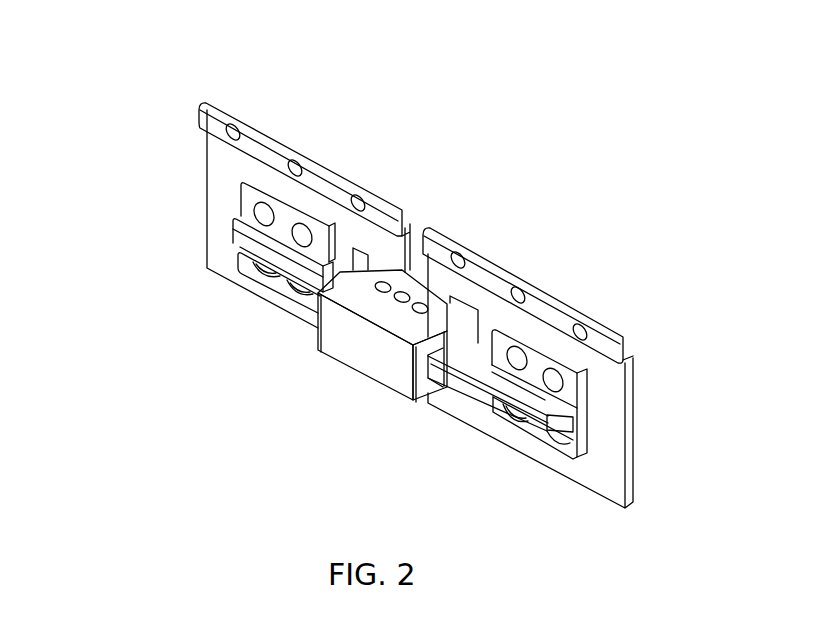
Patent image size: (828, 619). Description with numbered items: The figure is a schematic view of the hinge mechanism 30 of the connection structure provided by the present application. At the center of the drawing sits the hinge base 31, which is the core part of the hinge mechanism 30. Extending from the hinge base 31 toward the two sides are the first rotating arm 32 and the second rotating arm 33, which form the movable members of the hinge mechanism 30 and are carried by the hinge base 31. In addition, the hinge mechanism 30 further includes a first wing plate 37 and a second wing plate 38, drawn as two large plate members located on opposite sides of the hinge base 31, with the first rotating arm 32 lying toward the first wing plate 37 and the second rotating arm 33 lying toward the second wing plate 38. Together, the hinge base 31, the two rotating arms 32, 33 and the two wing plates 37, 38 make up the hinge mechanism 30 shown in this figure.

The hinge mechanism 30 is at (407, 113).
The hinge base 31 is at (367, 345).
The first rotating arm 32 is at (305, 255).
The second rotating arm 33 is at (483, 363).
The first wing plate 37 is at (222, 202).
The second wing plate 38 is at (603, 432).